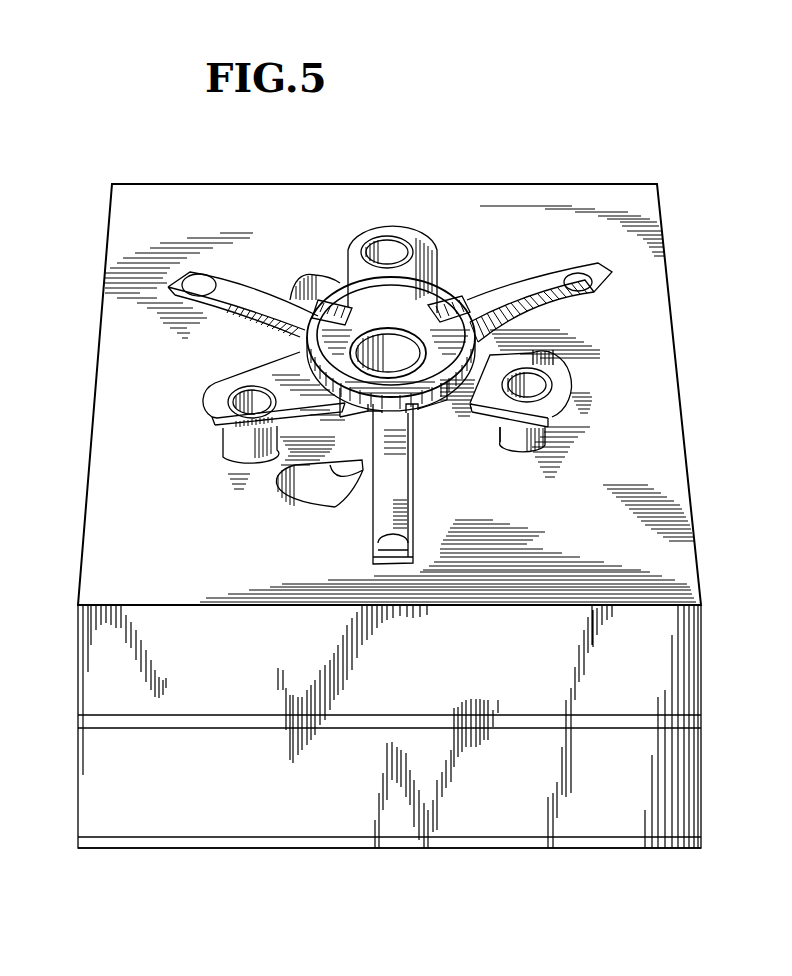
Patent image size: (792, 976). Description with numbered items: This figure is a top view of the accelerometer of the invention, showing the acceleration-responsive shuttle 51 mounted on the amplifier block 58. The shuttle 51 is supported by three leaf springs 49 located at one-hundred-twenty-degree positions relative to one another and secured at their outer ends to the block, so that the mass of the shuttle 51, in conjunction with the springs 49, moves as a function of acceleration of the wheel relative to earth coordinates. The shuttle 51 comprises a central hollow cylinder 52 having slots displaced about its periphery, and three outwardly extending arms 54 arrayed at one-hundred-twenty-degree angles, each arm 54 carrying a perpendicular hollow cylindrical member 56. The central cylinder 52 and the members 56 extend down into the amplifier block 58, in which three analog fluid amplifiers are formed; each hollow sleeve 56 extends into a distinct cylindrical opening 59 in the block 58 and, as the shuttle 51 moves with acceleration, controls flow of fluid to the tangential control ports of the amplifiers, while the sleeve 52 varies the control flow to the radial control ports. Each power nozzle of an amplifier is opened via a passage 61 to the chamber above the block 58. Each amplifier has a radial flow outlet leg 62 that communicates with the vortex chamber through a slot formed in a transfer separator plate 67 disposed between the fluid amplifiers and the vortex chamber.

The leaf springs 49 is at (247, 294).
The shuttle 51 is at (490, 347).
The central hollow cylinder 52 is at (402, 330).
The arms 54 is at (263, 360).
The hollow cylindrical member 56 is at (535, 402).
The amplifier block 58 is at (791, 330).
The cylindrical opening 59 is at (235, 450).
The passage 61 is at (318, 280).
The radial flow outlet leg 62 is at (791, 475).
The transfer separator plate 67 is at (700, 725).